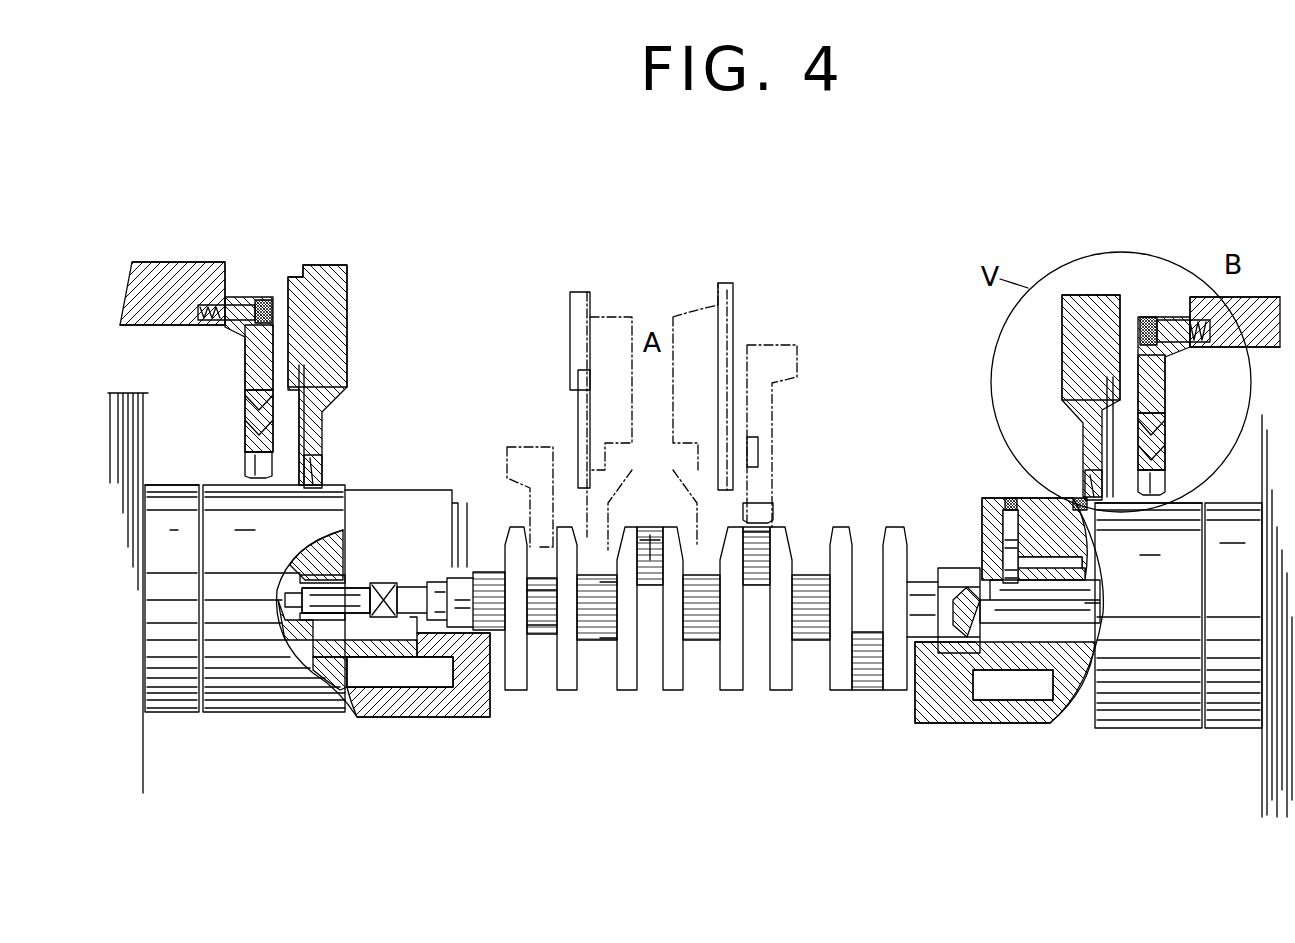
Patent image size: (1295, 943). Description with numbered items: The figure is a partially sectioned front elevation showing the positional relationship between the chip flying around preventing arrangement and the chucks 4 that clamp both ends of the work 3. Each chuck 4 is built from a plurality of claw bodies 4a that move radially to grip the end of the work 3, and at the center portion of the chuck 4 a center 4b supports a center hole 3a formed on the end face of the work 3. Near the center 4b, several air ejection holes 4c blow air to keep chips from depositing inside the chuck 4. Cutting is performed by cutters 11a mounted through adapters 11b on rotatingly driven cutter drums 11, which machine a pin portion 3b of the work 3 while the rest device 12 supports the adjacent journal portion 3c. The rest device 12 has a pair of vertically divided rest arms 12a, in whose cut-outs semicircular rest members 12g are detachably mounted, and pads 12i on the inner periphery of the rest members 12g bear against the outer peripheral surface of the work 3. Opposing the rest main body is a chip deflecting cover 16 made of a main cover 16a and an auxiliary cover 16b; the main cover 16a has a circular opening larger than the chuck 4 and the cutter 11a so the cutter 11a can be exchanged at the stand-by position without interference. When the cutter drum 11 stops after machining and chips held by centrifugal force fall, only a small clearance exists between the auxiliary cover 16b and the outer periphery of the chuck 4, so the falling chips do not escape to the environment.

The work 3 is at (732, 665).
The center hole 3a is at (955, 590).
The pin portion 3b is at (762, 558).
The journal portion 3c is at (705, 650).
The chuck 4 is at (1147, 705).
The claw body 4a is at (960, 712).
The center 4b is at (1087, 645).
The air ejection hole 4c is at (1150, 686).
The cutter drum 11 is at (1183, 318).
The cutter 11a is at (1162, 487).
The adapter 11b is at (1130, 320).
The rest device 12 is at (1043, 388).
The rest arm 12a is at (1082, 345).
The rest member 12g is at (1085, 455).
The pad 12i is at (1100, 505).
The chip deflecting cover 16 is at (1210, 410).
The main cover 16a is at (1150, 370).
The auxiliary cover 16b is at (1150, 422).